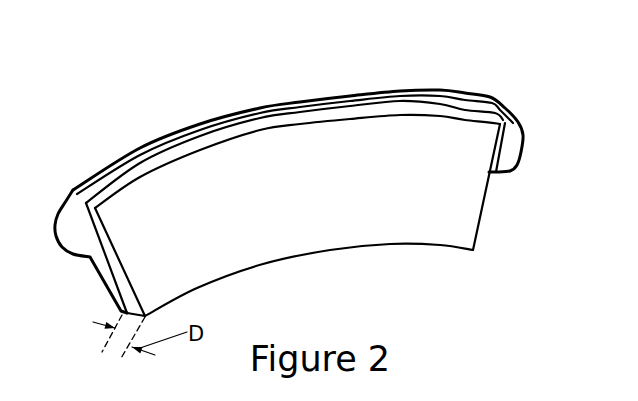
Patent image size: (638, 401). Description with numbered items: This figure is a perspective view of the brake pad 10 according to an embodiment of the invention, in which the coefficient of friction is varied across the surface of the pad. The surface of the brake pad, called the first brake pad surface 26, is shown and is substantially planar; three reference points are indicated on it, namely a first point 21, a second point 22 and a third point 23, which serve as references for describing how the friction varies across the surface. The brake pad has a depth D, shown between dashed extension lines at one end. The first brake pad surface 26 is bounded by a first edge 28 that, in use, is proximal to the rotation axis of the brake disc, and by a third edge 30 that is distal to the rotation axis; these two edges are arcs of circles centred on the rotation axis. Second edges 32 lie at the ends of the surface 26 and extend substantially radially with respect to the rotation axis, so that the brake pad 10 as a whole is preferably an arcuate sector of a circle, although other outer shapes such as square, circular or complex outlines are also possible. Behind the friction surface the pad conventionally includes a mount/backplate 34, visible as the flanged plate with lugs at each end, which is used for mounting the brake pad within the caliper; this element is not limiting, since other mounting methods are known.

The brake pad 10 is at (498, 75).
The first point 21 is at (310, 237).
The second point 22 is at (305, 187).
The third point 23 is at (299, 137).
The first brake pad surface 26 is at (452, 218).
The first edge 28 is at (415, 247).
The third edge 30 is at (380, 117).
The second edges 32 is at (487, 200).
The mount/backplate 34 is at (510, 148).